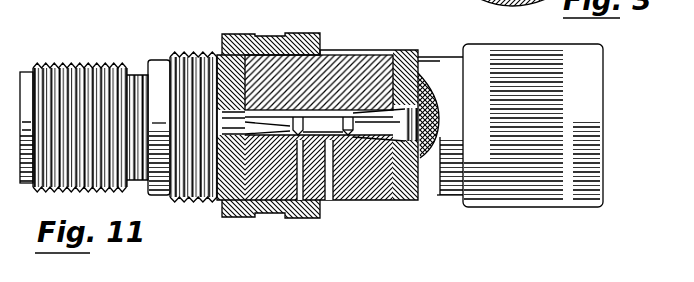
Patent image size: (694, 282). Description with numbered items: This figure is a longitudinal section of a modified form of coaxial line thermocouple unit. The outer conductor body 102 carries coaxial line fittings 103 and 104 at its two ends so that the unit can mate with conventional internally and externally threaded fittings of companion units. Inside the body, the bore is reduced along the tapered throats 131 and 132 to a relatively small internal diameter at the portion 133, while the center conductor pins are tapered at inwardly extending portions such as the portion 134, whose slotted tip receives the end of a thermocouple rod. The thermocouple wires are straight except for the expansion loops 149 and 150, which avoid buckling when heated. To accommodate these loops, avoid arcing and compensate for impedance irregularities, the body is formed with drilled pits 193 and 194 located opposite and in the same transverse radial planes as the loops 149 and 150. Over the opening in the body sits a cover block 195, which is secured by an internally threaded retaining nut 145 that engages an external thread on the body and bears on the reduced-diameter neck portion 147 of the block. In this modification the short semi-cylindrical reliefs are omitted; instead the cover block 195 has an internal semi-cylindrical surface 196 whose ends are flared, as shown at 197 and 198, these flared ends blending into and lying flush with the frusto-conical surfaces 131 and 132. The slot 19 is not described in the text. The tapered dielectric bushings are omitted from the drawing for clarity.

The coaxial line fitting 104 is at (72, 63).
The retaining nut 145 is at (228, 36).
The neck portion 147 is at (282, 17).
The cover block 195 is at (383, 50).
The internal semi-cylindrical surface 196 is at (319, 86).
The flared end 198 is at (278, 110).
The expansion loop 150 is at (300, 116).
The expansion loop 149 is at (350, 82).
The flared end 197 is at (437, 101).
The tapered portion 134 is at (437, 138).
The tapered throat 131 is at (437, 161).
The outer conductor body 102 is at (410, 197).
The pit 193 is at (355, 137).
The slot 19 is at (334, 191).
The portion of relatively small internal diameter 133 is at (330, 140).
The pit 194 is at (283, 218).
The tapered throat 132 is at (319, 167).
The coaxial line fitting 103 is at (565, 207).